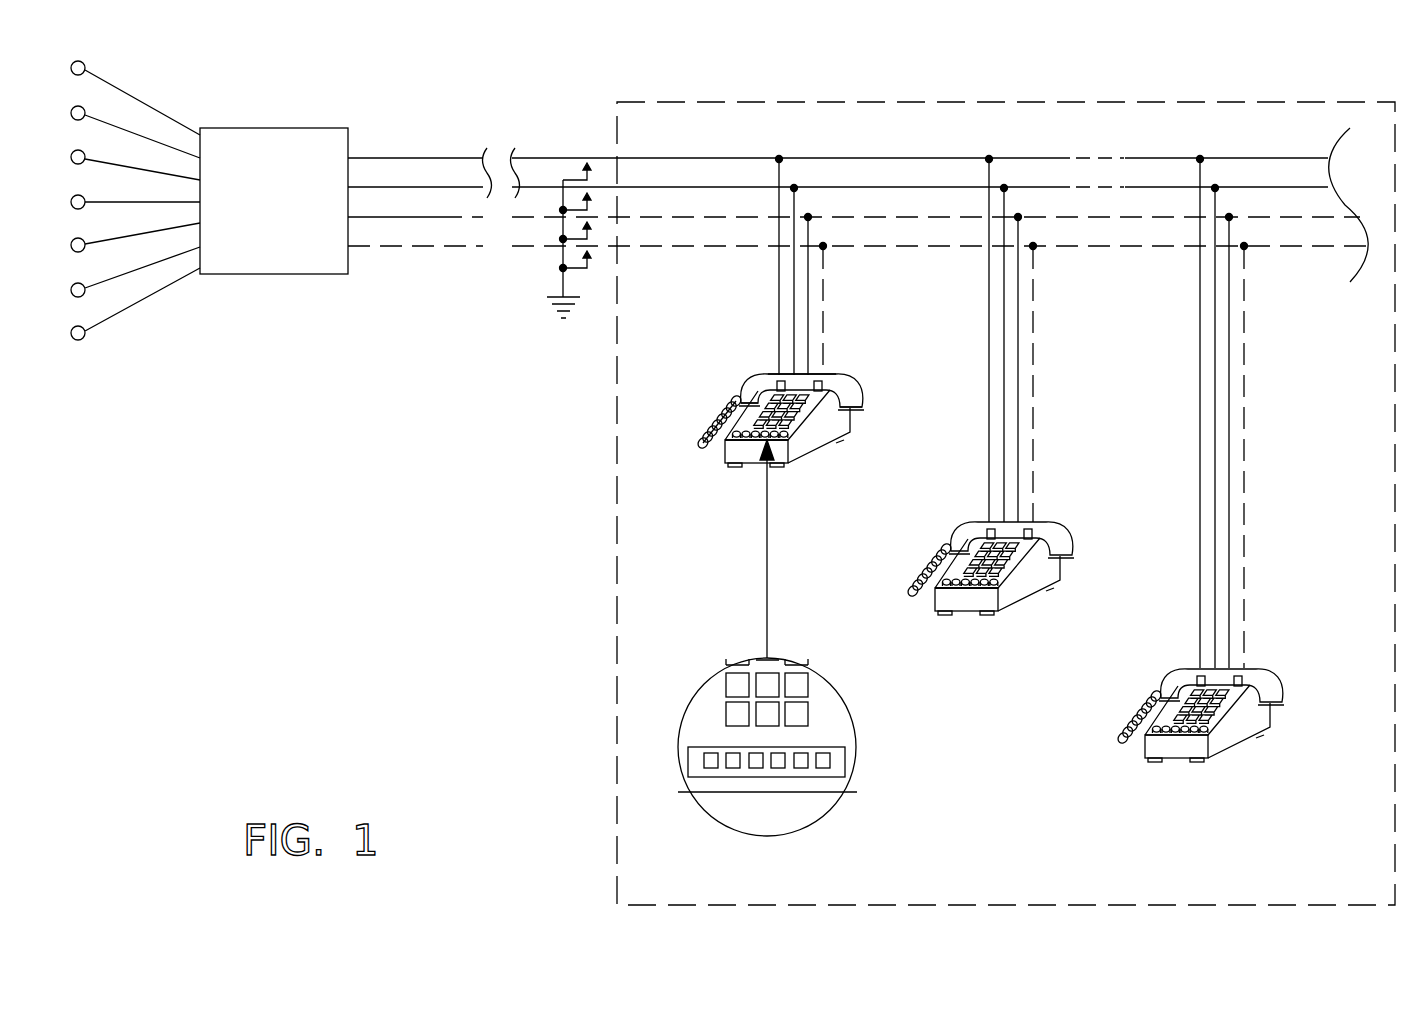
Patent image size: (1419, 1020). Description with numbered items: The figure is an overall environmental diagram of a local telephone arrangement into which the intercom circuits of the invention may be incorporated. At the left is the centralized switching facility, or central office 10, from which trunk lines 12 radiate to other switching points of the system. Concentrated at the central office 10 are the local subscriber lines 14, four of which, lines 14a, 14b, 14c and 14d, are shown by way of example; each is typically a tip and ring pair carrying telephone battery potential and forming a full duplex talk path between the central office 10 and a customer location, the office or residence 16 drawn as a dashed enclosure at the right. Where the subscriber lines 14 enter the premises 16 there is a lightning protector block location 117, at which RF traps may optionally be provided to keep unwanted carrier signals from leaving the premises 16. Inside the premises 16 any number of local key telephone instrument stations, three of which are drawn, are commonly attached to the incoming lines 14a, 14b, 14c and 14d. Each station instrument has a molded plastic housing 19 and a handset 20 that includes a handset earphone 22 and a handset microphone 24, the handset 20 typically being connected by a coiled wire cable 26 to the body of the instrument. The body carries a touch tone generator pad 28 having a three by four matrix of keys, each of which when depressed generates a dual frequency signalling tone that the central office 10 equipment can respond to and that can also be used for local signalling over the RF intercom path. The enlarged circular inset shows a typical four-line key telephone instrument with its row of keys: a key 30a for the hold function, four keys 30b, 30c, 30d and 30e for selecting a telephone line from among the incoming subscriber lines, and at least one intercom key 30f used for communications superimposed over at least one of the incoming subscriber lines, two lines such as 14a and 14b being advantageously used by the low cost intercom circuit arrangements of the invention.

The central office 10 is at (263, 250).
The trunk lines 12 is at (198, 323).
The local subscriber lines 14 is at (396, 148).
The subscriber line 14a is at (538, 157).
The subscriber line 14b is at (545, 187).
The subscriber line 14c is at (394, 222).
The subscriber line 14d is at (430, 252).
The office or residence 16 is at (612, 742).
The lightning protector block location 117 is at (546, 282).
The molded plastic housing 19 is at (745, 460).
The handset 20 is at (840, 375).
The handset earphone 22 is at (862, 408).
The handset microphone 24 is at (735, 403).
The coiled wire cable 26 is at (700, 418).
The touch tone generator pad 28 is at (770, 690).
The hold key 30a is at (710, 760).
The line selection key 30b is at (733, 768).
The line selection key 30c is at (756, 768).
The line selection key 30d is at (778, 768).
The line selection key 30e is at (801, 768).
The intercom key 30f is at (826, 764).